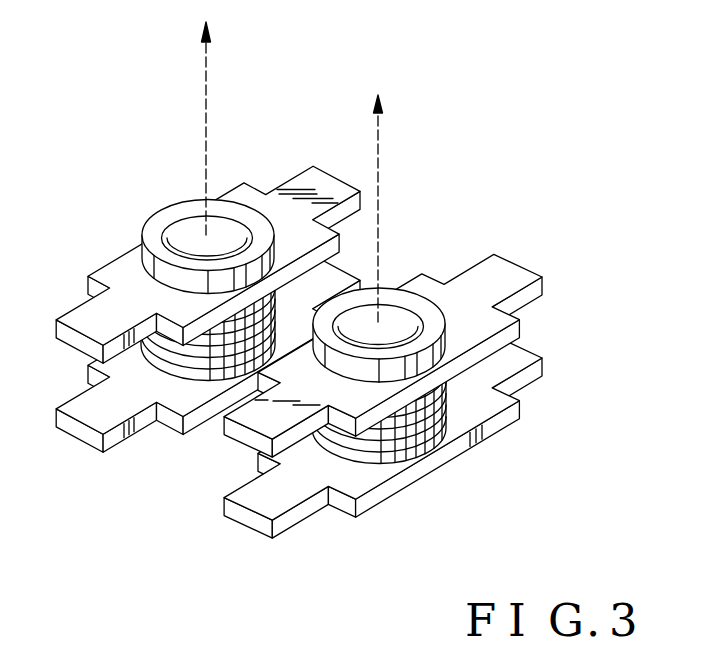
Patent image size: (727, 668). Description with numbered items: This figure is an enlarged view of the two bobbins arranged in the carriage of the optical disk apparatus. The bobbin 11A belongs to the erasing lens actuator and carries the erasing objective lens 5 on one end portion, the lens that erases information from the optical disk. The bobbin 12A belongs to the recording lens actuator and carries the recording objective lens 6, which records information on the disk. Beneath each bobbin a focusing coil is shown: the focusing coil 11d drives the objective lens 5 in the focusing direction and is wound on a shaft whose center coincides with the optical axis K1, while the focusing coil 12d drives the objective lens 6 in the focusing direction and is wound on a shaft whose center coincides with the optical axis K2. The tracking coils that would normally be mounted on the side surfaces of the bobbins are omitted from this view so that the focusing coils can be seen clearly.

The erasing objective lens 5 is at (402, 313).
The recording objective lens 6 is at (177, 233).
The bobbin 11A is at (505, 272).
The bobbin 12A is at (303, 178).
The focusing coil 11d is at (394, 445).
The focusing coil 12d is at (218, 345).
The optical axis K1 is at (388, 150).
The optical axis K2 is at (200, 85).